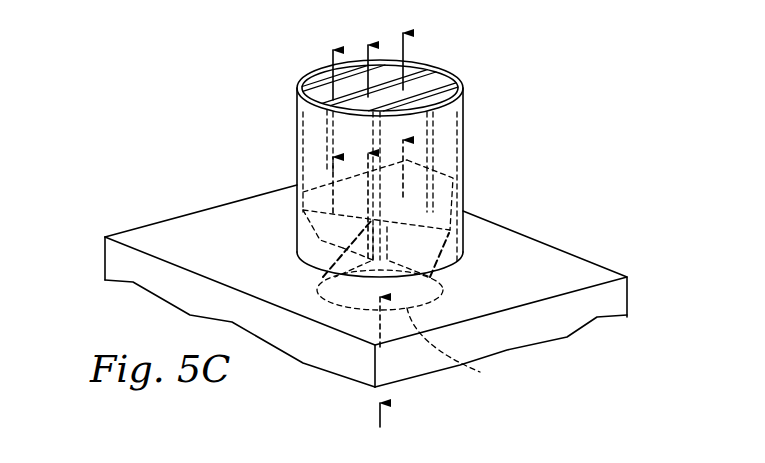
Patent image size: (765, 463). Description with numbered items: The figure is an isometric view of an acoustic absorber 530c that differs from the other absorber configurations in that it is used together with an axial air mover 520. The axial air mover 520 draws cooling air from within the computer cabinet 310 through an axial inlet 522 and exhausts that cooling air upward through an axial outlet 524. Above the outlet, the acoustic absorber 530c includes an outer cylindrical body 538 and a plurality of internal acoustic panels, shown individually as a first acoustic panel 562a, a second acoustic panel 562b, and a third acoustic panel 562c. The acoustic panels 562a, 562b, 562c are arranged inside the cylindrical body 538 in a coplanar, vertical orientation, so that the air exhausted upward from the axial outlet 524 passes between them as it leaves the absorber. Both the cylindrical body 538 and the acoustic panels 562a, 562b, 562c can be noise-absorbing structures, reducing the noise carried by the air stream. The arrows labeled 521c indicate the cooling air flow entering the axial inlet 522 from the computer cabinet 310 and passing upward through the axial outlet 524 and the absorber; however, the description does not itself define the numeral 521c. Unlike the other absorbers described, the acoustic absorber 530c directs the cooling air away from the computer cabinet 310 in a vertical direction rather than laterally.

The computer cabinet 310 is at (113, 262).
The axial air mover 520 is at (455, 247).
The axial inlet 522 is at (460, 346).
The axial outlet 524 is at (390, 202).
The gas flow 521c is at (405, 50).
The acoustic absorber 530c is at (467, 74).
The outer cylindrical body 538 is at (297, 157).
The first acoustic panel 562a is at (313, 88).
The second acoustic panel 562b is at (358, 72).
The third acoustic panel 562c is at (427, 72).